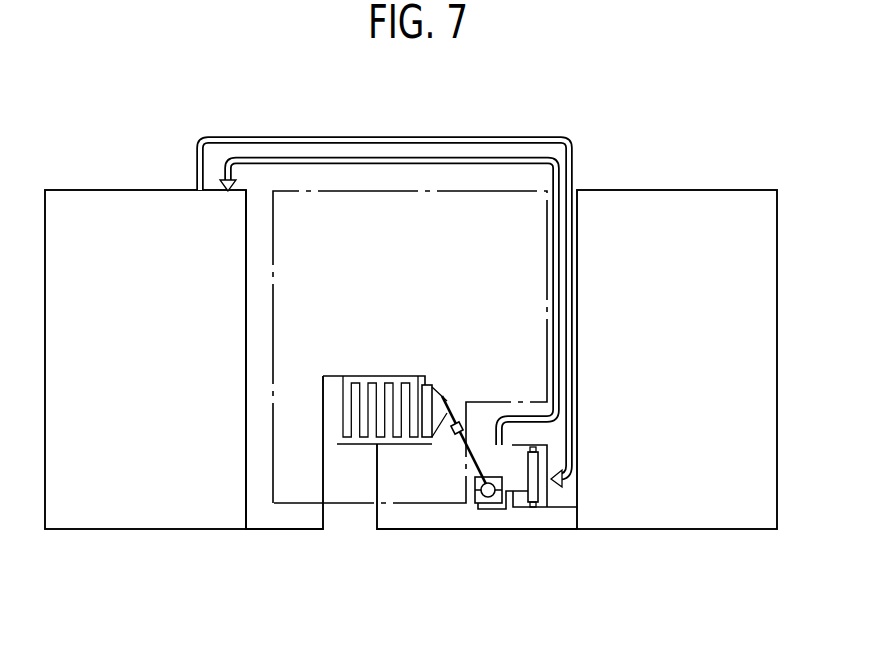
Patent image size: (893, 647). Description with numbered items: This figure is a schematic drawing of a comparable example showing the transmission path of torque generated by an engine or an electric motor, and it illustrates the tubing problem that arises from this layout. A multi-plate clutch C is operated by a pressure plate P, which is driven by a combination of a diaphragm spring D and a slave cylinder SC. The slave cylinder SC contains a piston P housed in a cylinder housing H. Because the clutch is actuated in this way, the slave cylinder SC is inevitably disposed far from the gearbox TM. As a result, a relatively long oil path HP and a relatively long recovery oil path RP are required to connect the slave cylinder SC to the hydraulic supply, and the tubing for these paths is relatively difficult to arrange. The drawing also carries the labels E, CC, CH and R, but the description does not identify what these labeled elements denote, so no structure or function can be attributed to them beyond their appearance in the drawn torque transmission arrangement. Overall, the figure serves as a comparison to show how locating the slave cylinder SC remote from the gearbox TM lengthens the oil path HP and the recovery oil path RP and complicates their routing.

The gearbox TM is at (141, 184).
The engine E is at (653, 184).
The cooling chamber CC is at (294, 546).
The chamber CH is at (441, 546).
The slave cylinder SC is at (546, 514).
The oil path HP is at (497, 137).
The recovery oil path RP is at (311, 157).
The multi-plate clutch C is at (336, 397).
The pressure plate P is at (430, 383).
The diaphragm spring D is at (444, 398).
The reservoir R is at (483, 477).
The cylinder housing H is at (548, 452).